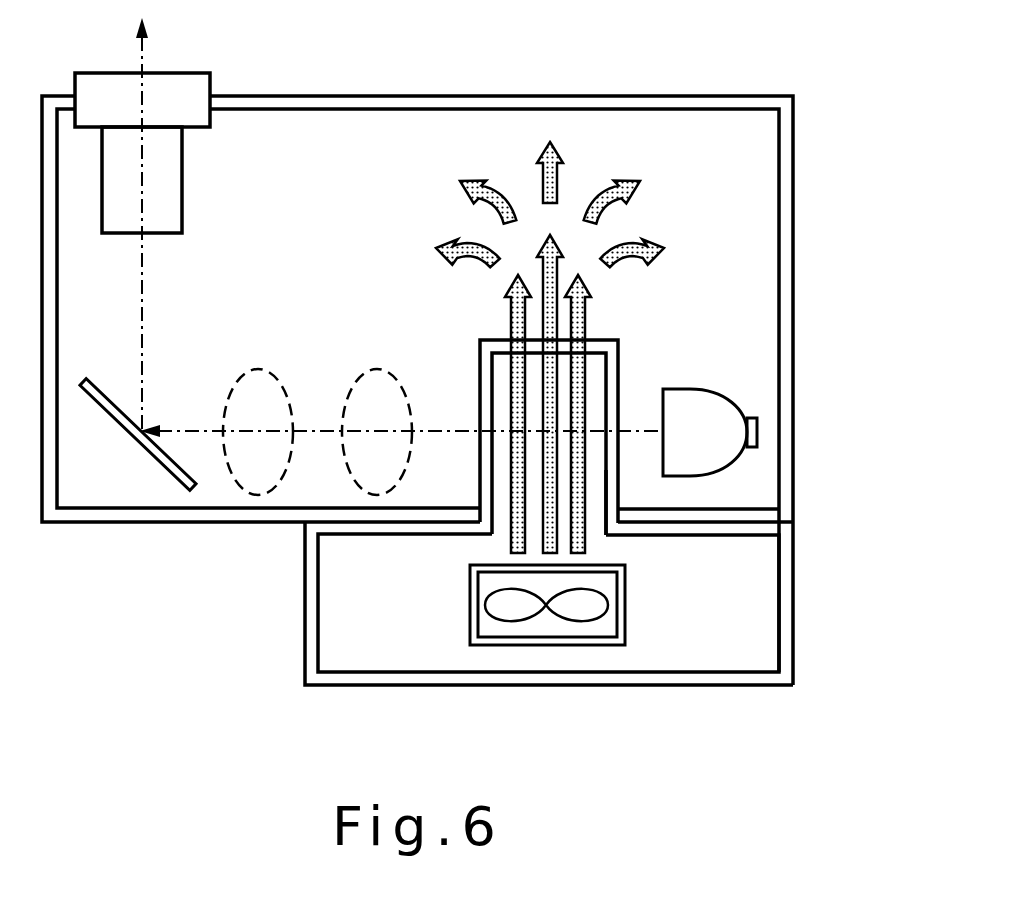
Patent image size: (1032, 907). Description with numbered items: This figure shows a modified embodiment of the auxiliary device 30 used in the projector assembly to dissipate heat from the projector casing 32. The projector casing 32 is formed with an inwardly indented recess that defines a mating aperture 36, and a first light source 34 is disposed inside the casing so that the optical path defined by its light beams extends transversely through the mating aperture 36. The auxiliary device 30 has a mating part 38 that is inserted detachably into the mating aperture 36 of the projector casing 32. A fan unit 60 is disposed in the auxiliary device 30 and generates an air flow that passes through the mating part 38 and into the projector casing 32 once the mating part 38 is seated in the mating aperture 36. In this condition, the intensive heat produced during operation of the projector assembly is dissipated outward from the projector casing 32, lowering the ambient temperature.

The auxiliary device 30 is at (840, 592).
The projector casing 32 is at (842, 125).
The first light source 34 is at (688, 387).
The mating aperture 36 is at (604, 332).
The mating part 38 is at (611, 487).
The fan unit 60 is at (618, 613).